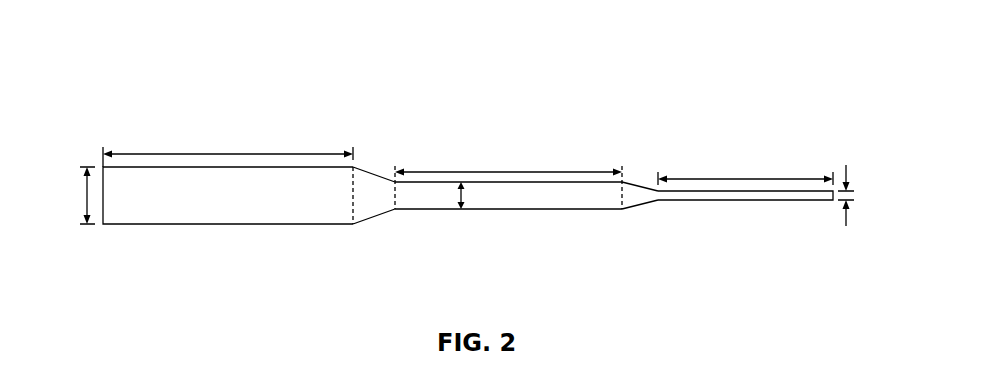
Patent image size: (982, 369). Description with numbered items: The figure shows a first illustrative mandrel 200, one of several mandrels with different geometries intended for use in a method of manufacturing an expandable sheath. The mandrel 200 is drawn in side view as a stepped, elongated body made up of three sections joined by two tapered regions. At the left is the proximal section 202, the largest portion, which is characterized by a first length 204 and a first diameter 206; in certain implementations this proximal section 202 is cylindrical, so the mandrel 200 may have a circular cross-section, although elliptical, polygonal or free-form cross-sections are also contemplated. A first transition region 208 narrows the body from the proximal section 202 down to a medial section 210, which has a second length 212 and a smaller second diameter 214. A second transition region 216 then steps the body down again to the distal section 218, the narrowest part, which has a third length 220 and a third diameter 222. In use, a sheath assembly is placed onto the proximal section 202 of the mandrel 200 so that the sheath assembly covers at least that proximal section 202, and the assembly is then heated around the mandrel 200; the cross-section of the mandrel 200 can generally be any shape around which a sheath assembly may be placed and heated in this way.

The mandrel 200 is at (117, 40).
The proximal section 202 is at (223, 224).
The first length 204 is at (233, 153).
The first diameter 206 is at (87, 194).
The first transition region 208 is at (375, 175).
The medial section 210 is at (543, 209).
The second length 212 is at (512, 172).
The second diameter 214 is at (458, 197).
The second transition region 216 is at (637, 182).
The distal section 218 is at (733, 200).
The third length 220 is at (748, 179).
The third diameter 222 is at (852, 197).